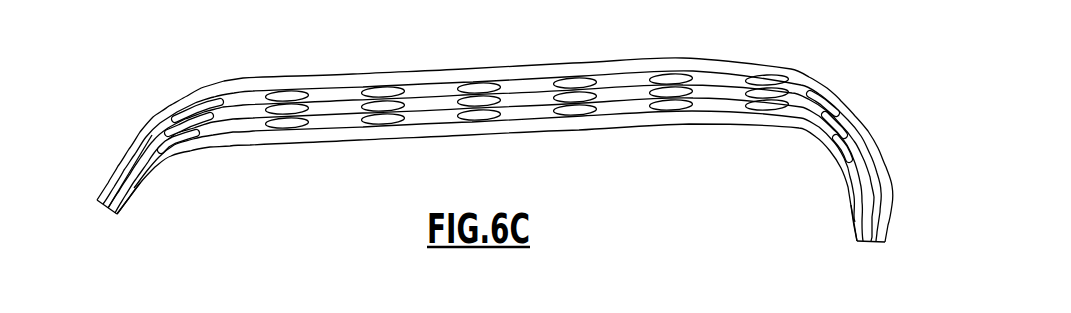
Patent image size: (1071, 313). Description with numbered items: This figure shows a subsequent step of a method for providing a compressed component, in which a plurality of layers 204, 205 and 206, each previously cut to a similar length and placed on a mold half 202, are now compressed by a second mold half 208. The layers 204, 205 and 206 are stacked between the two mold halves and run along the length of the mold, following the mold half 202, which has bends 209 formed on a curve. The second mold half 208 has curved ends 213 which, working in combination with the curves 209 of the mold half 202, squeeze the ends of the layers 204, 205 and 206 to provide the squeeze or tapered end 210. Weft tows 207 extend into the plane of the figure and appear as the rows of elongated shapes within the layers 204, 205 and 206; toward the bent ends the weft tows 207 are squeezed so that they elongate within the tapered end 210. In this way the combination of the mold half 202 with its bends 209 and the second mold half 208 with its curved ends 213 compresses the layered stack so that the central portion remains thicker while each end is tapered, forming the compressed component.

The mold half 202 is at (282, 140).
The layer 204 is at (237, 127).
The layer 205 is at (320, 110).
The layer 206 is at (419, 90).
The weft tows 207 is at (851, 140).
The second mold half 208 is at (143, 124).
The bends 209 is at (127, 199).
The tapered end 210 is at (133, 146).
The curved ends 213 is at (99, 196).